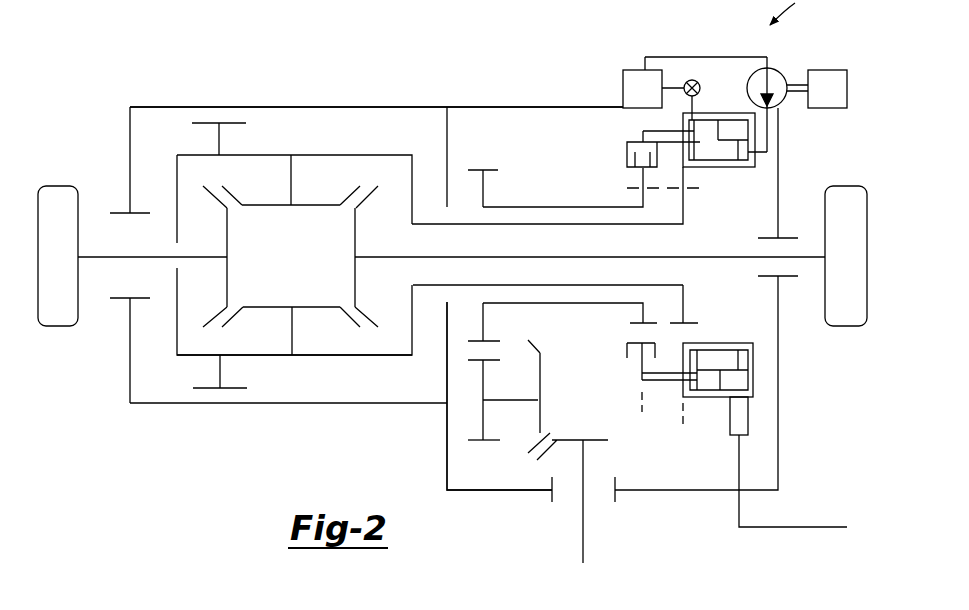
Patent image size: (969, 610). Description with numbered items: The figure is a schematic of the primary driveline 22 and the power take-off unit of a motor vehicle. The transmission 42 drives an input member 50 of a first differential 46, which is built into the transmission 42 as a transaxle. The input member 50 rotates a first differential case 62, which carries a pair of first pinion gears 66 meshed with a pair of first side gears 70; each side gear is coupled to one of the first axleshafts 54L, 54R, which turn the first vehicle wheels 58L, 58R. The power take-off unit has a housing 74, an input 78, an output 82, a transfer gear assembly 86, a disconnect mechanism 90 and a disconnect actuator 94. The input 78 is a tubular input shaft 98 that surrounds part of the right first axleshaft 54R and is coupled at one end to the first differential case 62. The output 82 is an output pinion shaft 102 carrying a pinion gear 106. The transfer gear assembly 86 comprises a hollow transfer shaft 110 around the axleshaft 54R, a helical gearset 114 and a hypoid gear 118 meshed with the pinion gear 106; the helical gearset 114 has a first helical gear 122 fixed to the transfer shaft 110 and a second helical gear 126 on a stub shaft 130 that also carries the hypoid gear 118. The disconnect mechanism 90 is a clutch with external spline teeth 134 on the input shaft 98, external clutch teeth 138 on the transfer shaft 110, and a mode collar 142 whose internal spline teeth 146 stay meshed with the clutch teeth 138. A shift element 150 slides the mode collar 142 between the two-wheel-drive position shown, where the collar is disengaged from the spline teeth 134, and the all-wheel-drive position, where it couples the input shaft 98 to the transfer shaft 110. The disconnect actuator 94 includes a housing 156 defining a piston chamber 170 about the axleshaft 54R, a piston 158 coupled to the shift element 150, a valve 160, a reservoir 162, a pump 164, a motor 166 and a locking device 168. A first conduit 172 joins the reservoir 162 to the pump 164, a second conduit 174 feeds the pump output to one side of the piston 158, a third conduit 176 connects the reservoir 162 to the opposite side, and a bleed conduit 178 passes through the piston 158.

The primary driveline 22 is at (250, 453).
The transmission 42 is at (128, 343).
The first differential 46 is at (330, 358).
The input member 50 is at (205, 392).
The first axleshaft 54L is at (98, 255).
The first axleshaft 54R is at (812, 255).
The first vehicle wheel 58L is at (60, 190).
The first vehicle wheel 58R is at (845, 200).
The first differential case 62 is at (352, 155).
The first pinion gears 66 is at (308, 205).
The first side gears 70 is at (355, 232).
The housing 74 is at (780, 470).
The input 78 is at (442, 226).
The output 82 is at (585, 540).
The transfer gear assembly 86 is at (485, 453).
The disconnect mechanism 90 is at (658, 190).
The disconnect actuator 94 is at (508, 79).
The input shaft 98 is at (430, 287).
The output pinion shaft 102 is at (583, 518).
The pinion gear 106 is at (608, 440).
The transfer shaft 110 is at (530, 207).
The helical gearset 114 is at (467, 362).
The hypoid gear 118 is at (548, 360).
The first helical gear 122 is at (476, 170).
The second helical gear 126 is at (475, 440).
The stub shaft 130 is at (512, 400).
The external spline teeth 134 is at (683, 300).
The external clutch teeth 138 is at (630, 322).
The mode collar 142 is at (633, 345).
The internal spline teeth 146 is at (627, 190).
The shift element 150 is at (628, 152).
The housing 156 is at (753, 385).
The piston 158 is at (728, 157).
The valve 160 is at (690, 80).
The reservoir 162 is at (635, 100).
The pump 164 is at (775, 70).
The motor 166 is at (848, 78).
The locking device 168 is at (748, 415).
The piston chamber 170 is at (753, 362).
The first conduit 172 is at (643, 78).
The second conduit 174 is at (770, 135).
The third conduit 176 is at (697, 101).
The bleed conduit 178 is at (715, 358).